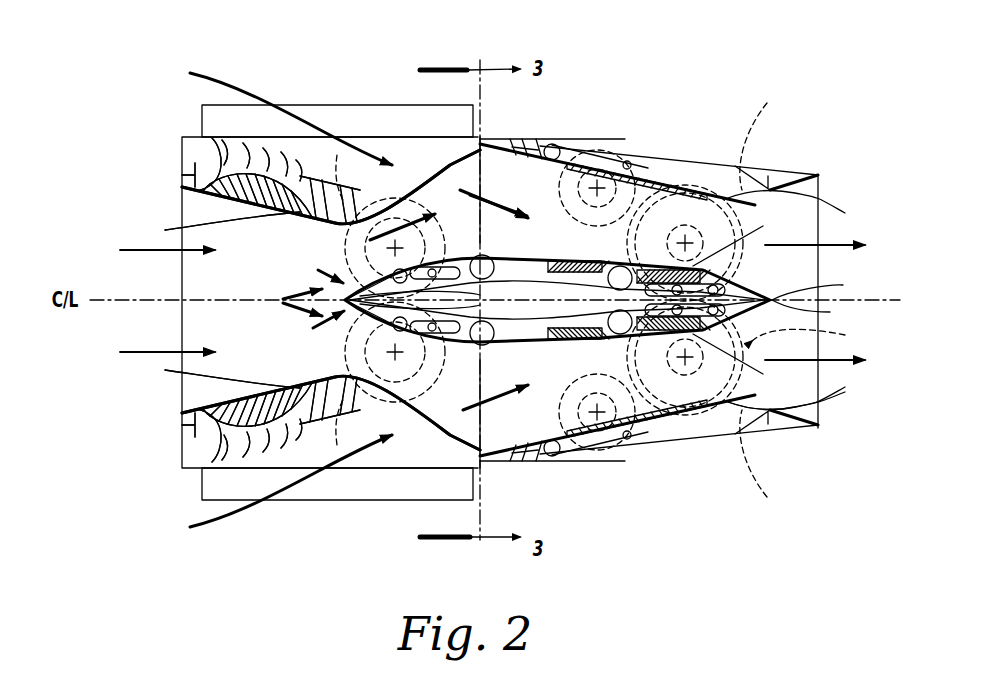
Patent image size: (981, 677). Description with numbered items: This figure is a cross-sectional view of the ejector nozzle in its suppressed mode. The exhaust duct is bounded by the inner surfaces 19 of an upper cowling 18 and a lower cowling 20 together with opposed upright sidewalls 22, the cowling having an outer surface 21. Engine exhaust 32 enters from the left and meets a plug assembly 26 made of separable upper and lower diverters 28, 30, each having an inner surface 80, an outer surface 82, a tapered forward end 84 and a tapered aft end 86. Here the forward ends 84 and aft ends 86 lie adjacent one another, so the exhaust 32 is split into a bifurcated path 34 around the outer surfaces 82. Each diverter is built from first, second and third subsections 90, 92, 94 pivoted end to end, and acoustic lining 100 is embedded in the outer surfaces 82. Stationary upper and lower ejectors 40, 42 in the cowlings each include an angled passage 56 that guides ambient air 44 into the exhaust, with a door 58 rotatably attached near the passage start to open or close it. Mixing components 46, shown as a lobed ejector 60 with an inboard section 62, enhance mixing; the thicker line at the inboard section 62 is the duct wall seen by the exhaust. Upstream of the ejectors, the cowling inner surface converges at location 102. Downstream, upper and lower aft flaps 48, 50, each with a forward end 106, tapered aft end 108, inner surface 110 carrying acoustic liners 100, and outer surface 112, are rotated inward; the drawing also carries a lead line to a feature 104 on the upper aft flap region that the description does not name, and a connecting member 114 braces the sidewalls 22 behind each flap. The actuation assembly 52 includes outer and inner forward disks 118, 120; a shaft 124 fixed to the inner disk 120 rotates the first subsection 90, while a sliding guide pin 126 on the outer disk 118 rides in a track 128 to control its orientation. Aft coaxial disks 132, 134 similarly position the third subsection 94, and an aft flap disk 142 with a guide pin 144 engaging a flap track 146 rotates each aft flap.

The upper cowling 18 is at (197, 137).
The inner surfaces of the cowlings 19 is at (200, 197).
The lower cowling 20 is at (192, 470).
The cowling outer surface 21 is at (565, 148).
The upright sidewalls 22 is at (822, 188).
The plug assembly 26 is at (315, 293).
The upper diverter 28 is at (748, 280).
The lower diverter 30 is at (512, 342).
The engine exhaust 32 is at (158, 250).
The bifurcated path 34 is at (315, 312).
The upper ejector 40 is at (313, 94).
The lower ejector 42 is at (315, 510).
The ambient air 44 is at (215, 77).
The mixing components 46 is at (486, 167).
The upper aft flap 48 is at (678, 176).
The lower aft flap 50 is at (665, 430).
The actuation assembly 52 is at (338, 252).
The angled passage 56 is at (302, 174).
The door 58 is at (360, 112).
The lobed ejector 60 is at (450, 188).
The inboard section 62 is at (418, 470).
The diverter inner surface 80 is at (543, 283).
The diverter outer surface 82 is at (548, 260).
The diverter forward end 84 is at (316, 330).
The diverter aft end 86 is at (818, 291).
The first subsection 90 is at (443, 277).
The second subsection 92 is at (552, 312).
The third subsection 94 is at (741, 242).
The acoustic lining 100 is at (572, 340).
The upstream cowling inner surface location 102 is at (216, 227).
The upper flap actuator point 104 is at (613, 130).
The aft flap forward end 106 is at (540, 188).
The aft flap aft end 108 is at (803, 305).
The aft flap inner surface 110 is at (695, 405).
The aft flap outer surface 112 is at (672, 172).
The connecting member 114 is at (790, 170).
The outer forward disk 118 is at (325, 360).
The inner forward disk 120 is at (332, 440).
The shaft 124 is at (330, 268).
The sliding guide pin 126 is at (426, 370).
The track 128 is at (450, 325).
The aft coaxial rotatable disk 132 is at (625, 240).
The aft coaxial rotatable disk 134 is at (771, 139).
The aft flap disk 142 is at (578, 388).
The guide pin 144 is at (630, 442).
The flap track 146 is at (590, 447).